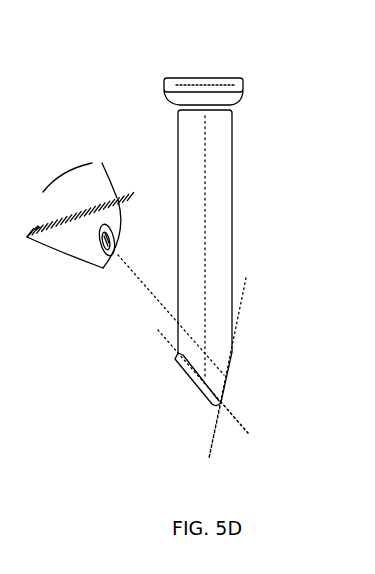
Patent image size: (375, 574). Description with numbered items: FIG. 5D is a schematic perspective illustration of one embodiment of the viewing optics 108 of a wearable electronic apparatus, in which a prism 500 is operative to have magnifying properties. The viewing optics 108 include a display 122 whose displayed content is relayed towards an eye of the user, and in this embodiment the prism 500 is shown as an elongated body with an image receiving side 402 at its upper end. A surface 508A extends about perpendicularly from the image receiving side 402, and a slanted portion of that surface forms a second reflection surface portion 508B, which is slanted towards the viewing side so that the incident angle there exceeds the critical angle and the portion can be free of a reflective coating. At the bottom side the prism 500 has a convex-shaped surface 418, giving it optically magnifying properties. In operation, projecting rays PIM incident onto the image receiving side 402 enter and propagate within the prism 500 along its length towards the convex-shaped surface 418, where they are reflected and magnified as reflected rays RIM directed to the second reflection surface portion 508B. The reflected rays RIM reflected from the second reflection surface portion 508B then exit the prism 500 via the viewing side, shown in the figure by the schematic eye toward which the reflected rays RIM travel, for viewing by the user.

The viewing optics 108 is at (204, 218).
The display 122 is at (178, 82).
The image receiving side 402 is at (217, 72).
The prism 500 is at (240, 225).
The convex-shaped surface 418 is at (192, 374).
The surface 508A is at (232, 277).
The second reflection surface portion 508B is at (226, 373).
The projecting rays PIM is at (208, 181).
The reflected rays RIM is at (153, 298).